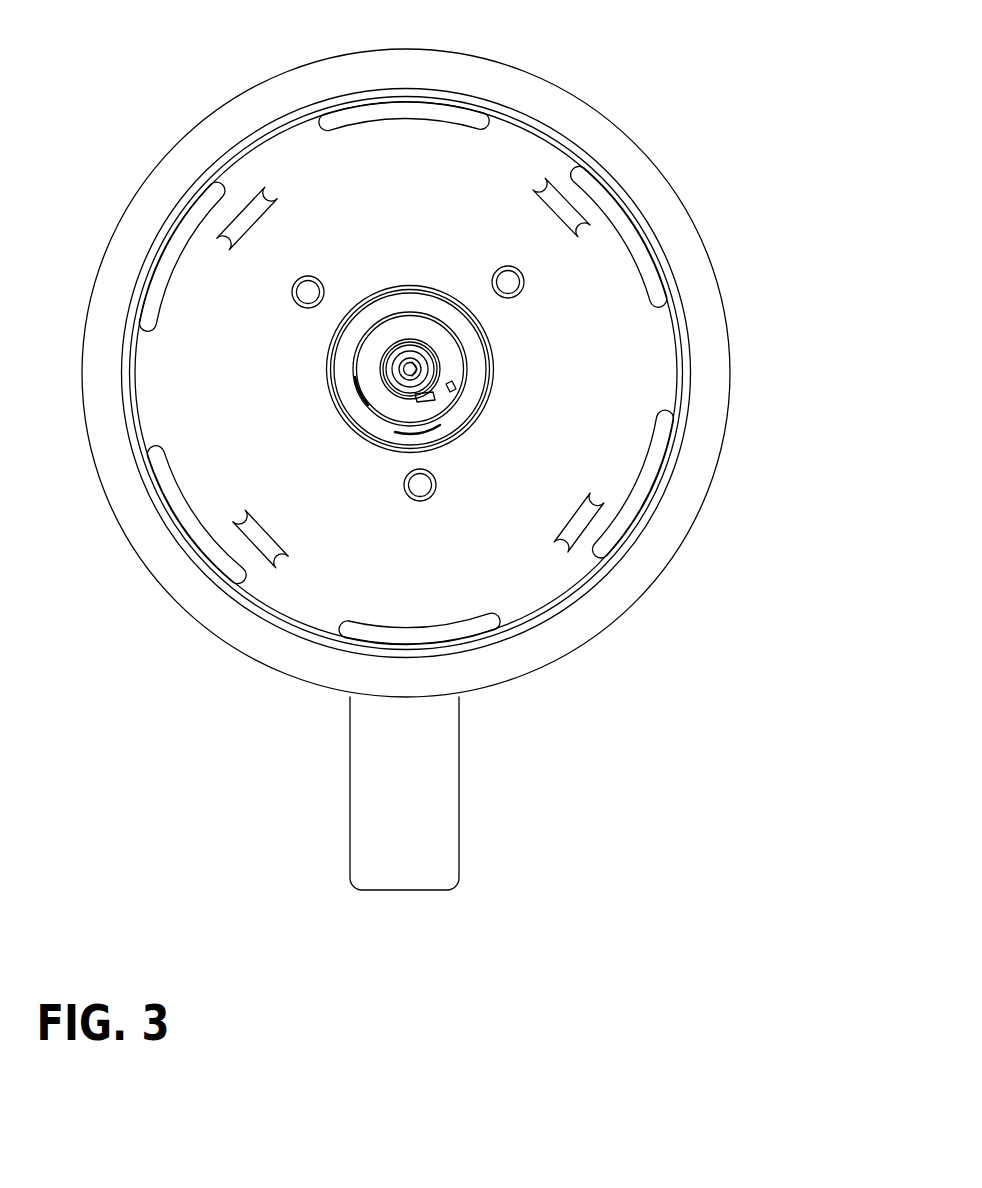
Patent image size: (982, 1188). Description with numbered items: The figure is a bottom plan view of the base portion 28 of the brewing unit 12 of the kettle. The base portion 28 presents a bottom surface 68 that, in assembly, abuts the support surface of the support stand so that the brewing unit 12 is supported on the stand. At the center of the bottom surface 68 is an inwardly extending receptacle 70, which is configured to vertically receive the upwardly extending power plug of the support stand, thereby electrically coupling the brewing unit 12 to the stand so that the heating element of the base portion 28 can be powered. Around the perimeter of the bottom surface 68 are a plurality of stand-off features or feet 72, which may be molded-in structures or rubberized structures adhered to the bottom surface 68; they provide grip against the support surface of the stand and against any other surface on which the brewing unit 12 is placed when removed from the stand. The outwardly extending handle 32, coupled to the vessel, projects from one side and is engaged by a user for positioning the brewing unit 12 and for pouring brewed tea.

The brewing unit 12 is at (762, 315).
The base portion 28 is at (733, 357).
The handle 32 is at (435, 832).
The bottom surface 68 is at (505, 542).
The receptacle 70 is at (440, 356).
The feet 72 is at (382, 112).